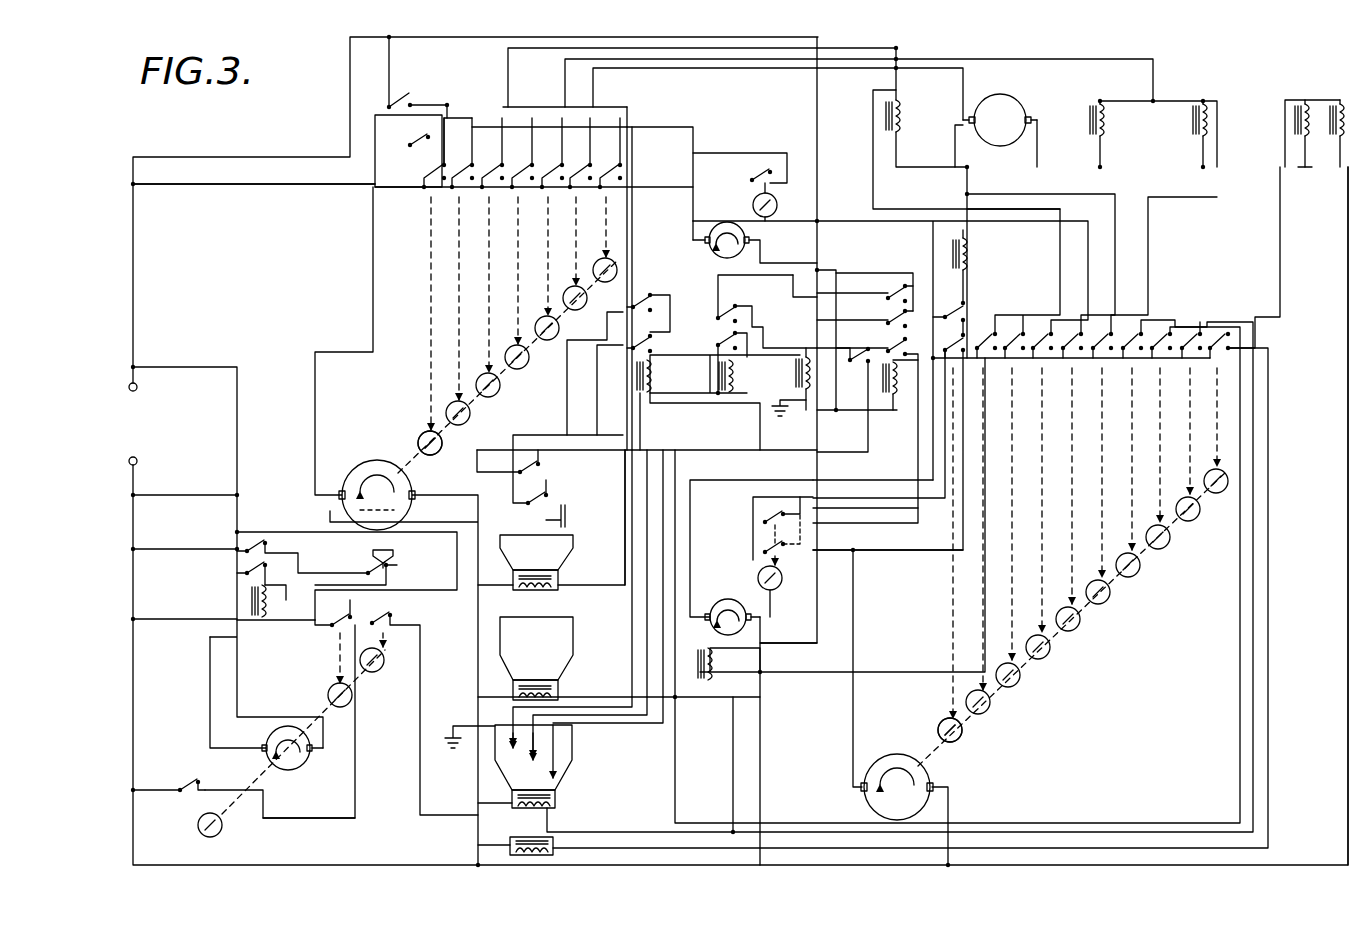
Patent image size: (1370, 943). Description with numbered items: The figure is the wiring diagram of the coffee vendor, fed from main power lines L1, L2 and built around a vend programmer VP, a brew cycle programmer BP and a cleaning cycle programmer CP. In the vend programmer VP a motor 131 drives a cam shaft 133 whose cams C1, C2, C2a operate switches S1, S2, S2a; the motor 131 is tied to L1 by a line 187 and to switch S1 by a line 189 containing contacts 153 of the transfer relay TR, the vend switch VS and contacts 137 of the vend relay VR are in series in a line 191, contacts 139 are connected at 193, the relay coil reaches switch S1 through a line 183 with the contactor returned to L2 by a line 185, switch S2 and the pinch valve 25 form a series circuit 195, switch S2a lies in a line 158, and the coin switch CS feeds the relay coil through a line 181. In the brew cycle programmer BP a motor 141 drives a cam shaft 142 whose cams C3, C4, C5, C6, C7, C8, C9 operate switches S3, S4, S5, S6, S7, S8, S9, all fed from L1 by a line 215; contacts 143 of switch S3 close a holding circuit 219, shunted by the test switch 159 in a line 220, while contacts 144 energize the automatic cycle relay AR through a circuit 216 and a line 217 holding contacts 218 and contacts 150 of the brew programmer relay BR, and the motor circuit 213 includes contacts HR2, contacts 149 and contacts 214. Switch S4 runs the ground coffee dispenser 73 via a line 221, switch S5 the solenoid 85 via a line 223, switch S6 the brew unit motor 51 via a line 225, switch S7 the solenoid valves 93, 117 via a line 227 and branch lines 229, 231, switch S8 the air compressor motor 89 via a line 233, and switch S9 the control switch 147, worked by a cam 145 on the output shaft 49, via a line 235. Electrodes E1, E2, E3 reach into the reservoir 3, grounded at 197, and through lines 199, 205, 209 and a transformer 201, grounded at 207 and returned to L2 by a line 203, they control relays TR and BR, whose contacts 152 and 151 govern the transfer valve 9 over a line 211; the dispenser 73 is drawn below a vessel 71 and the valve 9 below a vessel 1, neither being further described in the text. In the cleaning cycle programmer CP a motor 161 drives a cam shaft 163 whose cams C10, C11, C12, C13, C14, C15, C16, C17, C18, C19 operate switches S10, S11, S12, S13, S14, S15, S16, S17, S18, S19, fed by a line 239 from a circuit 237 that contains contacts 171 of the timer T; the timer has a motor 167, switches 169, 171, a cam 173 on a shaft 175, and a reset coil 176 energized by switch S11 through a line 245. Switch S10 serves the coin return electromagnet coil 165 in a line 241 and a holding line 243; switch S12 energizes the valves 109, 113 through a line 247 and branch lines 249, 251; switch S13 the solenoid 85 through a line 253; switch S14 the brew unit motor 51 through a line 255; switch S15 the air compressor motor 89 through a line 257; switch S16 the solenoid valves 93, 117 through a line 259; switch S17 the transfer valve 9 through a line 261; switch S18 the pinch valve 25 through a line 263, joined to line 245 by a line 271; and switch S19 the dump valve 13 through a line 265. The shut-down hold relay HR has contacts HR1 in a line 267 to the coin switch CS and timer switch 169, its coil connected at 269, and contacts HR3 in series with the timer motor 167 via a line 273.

The line conductor L1 is at (350, 73).
The line conductor L2 is at (138, 730).
The conductor 215 is at (238, 186).
The conductor 216 is at (372, 248).
The conductor 187 is at (236, 402).
The conductor 220 is at (392, 46).
The main switch 159 is at (412, 93).
The switch contact 144 is at (420, 132).
The selector switch S3 is at (412, 154).
The switch contact 143 is at (420, 176).
The conductor 219 is at (565, 437).
The selector switch S4 is at (462, 259).
The selector switch S5 is at (492, 245).
The selector switch S6 is at (521, 231).
The selector switch S7 is at (551, 216).
The selector switch S8 is at (579, 201).
The selector switch S9 is at (609, 187).
The conductor 223 is at (508, 72).
The conductor 227 is at (565, 63).
The conductor 233 is at (749, 58).
The conductor 221 is at (553, 106).
The conductor 225 is at (673, 125).
The conductor 235 is at (740, 154).
The switch 147 is at (760, 160).
The indicator lamp 145 is at (755, 205).
The conductor 237 is at (840, 221).
The blower motor 49 is at (745, 236).
The motor lead 51 is at (710, 252).
The conductor 217 is at (805, 266).
The conductor 253 is at (873, 102).
The solenoid coil 85 is at (902, 121).
The motor 89 is at (1020, 103).
The conductor 257 is at (955, 147).
The conductor 241 is at (968, 180).
The conductor 229 is at (1124, 101).
The conductor 231 is at (1172, 101).
The solenoid coil 93 is at (1102, 120).
The solenoid coil 117 is at (1198, 122).
The solenoid coil 113 is at (1295, 122).
The solenoid coil 109 is at (1326, 102).
The conductor 251 is at (1306, 165).
The conductor 249 is at (1341, 181).
The conductor 247 is at (1280, 258).
The conductor 259 is at (1148, 247).
The conductor 255 is at (1004, 230).
The relay coil 165 is at (968, 252).
The conductor 213 is at (929, 270).
The heater relay contact HR3 is at (888, 294).
The heater relay contact HR2 is at (888, 320).
The heater relay contact HR1 is at (888, 346).
The relay contact CS is at (853, 378).
The heater relay coil HR is at (890, 402).
The conductor 269 is at (888, 409).
The conductor 273 is at (816, 308).
The conductor 211 is at (730, 288).
The switch contact 149 is at (650, 296).
The switch contact 150 is at (642, 335).
The switch contact 152 is at (722, 309).
The switch contact 151 is at (720, 340).
The conductor 209 is at (710, 362).
The blower relay coil BR is at (660, 384).
The timer relay coil TR is at (728, 402).
The transformer coil 201 is at (784, 386).
The ground connection 207 is at (774, 410).
The conductor 203 is at (817, 437).
The switch contact 214 is at (525, 462).
The switch contact 218 is at (546, 494).
The relay coil AR is at (575, 520).
The hopper 3 is at (580, 788).
The conductor 181 is at (744, 466).
The blower motor 141 is at (382, 462).
The motor shaft 142 is at (397, 456).
The blower cam switch bank BP is at (422, 427).
The cam C3 is at (434, 443).
The cam C4 is at (464, 419).
The cam C5 is at (491, 391).
The cam C6 is at (518, 363).
The cam C7 is at (550, 337).
The cam C8 is at (578, 307).
The cam C9 is at (614, 258).
The switch contact 169 is at (766, 518).
The switch contact 171 is at (766, 550).
The indicator lamp 173 is at (779, 574).
The conductor 175 is at (762, 594).
The timer motor T is at (740, 592).
The conductor 167 is at (752, 620).
The relay coil 176 is at (692, 655).
The conductor 245 is at (883, 678).
The conductor 199 is at (647, 655).
The conductor 205 is at (632, 625).
The conductor 261 is at (676, 792).
The conductor 271 is at (733, 744).
The conductor 263 is at (645, 828).
The conductor 265 is at (1268, 768).
The conductor 267 is at (870, 527).
The conductor 243 is at (890, 554).
The hopper 71 is at (568, 548).
The heating element 73 is at (533, 588).
The hopper 1 is at (535, 660).
The heating element 9 is at (558, 690).
The electrode E1 is at (512, 754).
The electrode E2 is at (545, 743).
The electrode E3 is at (560, 763).
The heating element 25 is at (558, 802).
The heating element 13 is at (513, 837).
The conductor 195 is at (280, 534).
The ground connection 197 is at (448, 732).
The conductor 191 is at (195, 550).
The switch contact 137 is at (268, 548).
The switch contact 139 is at (262, 569).
The conductor 193 is at (258, 592).
The voltage relay coil VR is at (245, 601).
The conductor 183 is at (300, 616).
The vacuum switch VS is at (412, 568).
The switch S1 is at (348, 611).
The switch S2 is at (410, 610).
The conductor 185 is at (160, 628).
The conductor 153 is at (332, 647).
The cam C2 is at (376, 670).
The cam shaft 133 is at (362, 680).
The cam C1 is at (349, 708).
The conductor 189 is at (208, 690).
The vacuum pump motor VP is at (262, 762).
The motor 131 is at (288, 770).
The switch S2a is at (194, 780).
The cam C2a is at (200, 824).
The conductor 158 is at (326, 818).
The selector switch S10 is at (972, 306).
The selector switch S11 is at (984, 333).
The selector switch S12 is at (1016, 364).
The selector switch S13 is at (1045, 364).
The selector switch S14 is at (1075, 364).
The selector switch S15 is at (1105, 364).
The selector switch S16 is at (1134, 364).
The selector switch S17 is at (1163, 364).
The selector switch S18 is at (1190, 326).
The selector switch S19 is at (1220, 326).
The conductor 239 is at (1200, 388).
The cam motor 161 is at (872, 800).
The motor shaft 163 is at (932, 758).
The cam program switch bank CP is at (1030, 712).
The cam C10 is at (962, 738).
The cam C11 is at (988, 708).
The cam C12 is at (1018, 680).
The cam C13 is at (1048, 652).
The cam C14 is at (1083, 624).
The cam C15 is at (1108, 595).
The cam C16 is at (1138, 568).
The cam C17 is at (1168, 540).
The cam C18 is at (1196, 508).
The cam C19 is at (1230, 478).